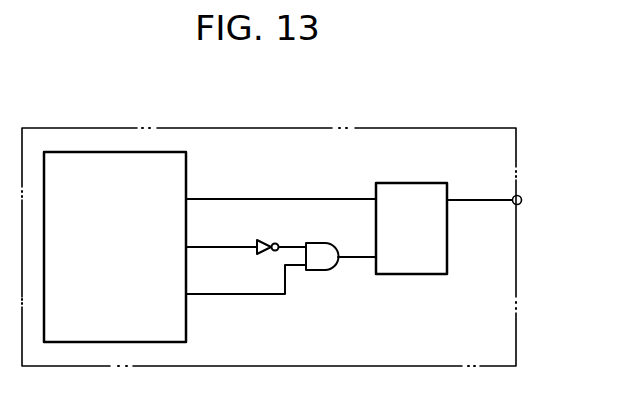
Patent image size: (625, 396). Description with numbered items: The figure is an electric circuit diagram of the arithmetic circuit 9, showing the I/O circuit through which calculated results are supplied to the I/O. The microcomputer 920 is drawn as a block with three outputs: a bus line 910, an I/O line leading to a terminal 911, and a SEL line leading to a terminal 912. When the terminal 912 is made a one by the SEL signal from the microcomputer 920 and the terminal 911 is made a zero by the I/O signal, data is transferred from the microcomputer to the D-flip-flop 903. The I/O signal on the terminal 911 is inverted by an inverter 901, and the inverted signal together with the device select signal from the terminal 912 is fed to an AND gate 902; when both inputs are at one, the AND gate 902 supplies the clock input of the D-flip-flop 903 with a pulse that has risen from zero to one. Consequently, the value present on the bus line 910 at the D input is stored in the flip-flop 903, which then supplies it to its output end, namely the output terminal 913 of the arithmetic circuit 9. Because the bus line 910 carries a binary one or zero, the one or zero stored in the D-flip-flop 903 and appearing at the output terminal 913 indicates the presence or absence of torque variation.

The arithmetic circuit 9 is at (407, 129).
The inverter 901 is at (268, 240).
The AND gate 902 is at (328, 243).
The D-flip-flop 903 is at (414, 183).
The bus line BUS 11 910 is at (220, 198).
The I/O terminal 911 is at (215, 245).
The SEL terminal 912 is at (215, 294).
The output terminal 913 is at (522, 200).
The microcomputer 920 is at (187, 330).